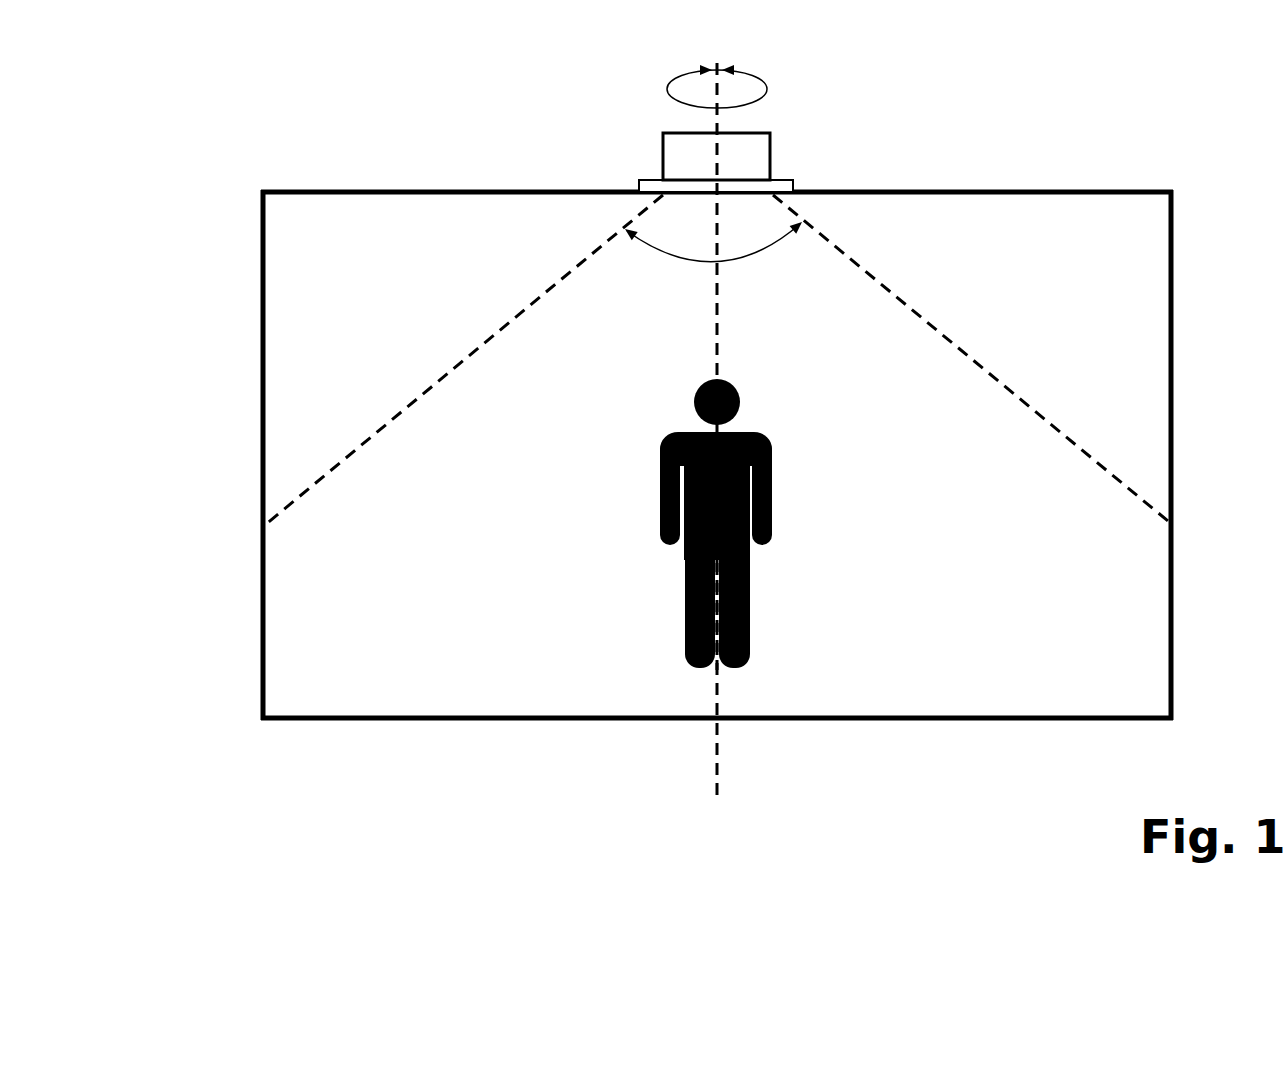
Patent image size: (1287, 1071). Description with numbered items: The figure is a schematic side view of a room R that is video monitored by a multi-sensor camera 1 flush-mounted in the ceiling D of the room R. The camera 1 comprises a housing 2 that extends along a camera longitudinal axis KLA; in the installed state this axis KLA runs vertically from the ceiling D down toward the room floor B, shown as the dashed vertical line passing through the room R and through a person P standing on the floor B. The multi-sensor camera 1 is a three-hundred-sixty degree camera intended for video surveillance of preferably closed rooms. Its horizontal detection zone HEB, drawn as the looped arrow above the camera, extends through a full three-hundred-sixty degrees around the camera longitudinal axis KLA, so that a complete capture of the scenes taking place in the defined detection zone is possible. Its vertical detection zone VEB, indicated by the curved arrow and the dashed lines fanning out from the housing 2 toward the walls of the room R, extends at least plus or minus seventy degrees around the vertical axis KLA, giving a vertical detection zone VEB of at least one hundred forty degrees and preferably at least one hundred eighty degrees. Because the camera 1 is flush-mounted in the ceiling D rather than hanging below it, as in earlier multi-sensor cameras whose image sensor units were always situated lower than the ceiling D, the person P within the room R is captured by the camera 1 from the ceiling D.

The multi-sensor camera 1 is at (800, 150).
The housing 2 is at (770, 133).
The room R is at (247, 241).
The ceiling D is at (985, 188).
The floor B is at (503, 722).
The camera longitudinal axis KLA is at (717, 67).
The horizontal detection zone HEB is at (753, 90).
The vertical detection zone VEB is at (755, 263).
The person P is at (653, 479).